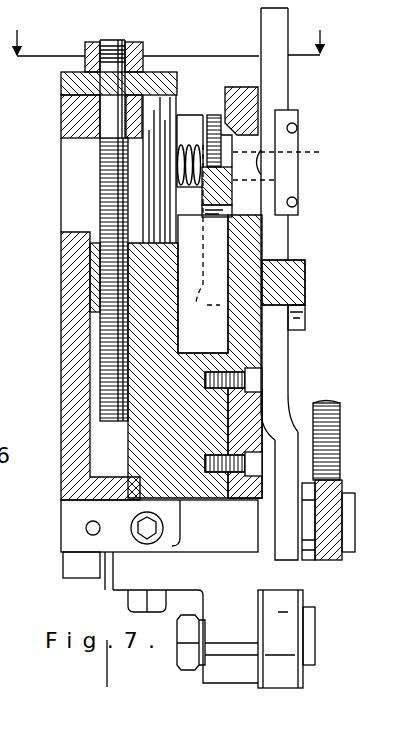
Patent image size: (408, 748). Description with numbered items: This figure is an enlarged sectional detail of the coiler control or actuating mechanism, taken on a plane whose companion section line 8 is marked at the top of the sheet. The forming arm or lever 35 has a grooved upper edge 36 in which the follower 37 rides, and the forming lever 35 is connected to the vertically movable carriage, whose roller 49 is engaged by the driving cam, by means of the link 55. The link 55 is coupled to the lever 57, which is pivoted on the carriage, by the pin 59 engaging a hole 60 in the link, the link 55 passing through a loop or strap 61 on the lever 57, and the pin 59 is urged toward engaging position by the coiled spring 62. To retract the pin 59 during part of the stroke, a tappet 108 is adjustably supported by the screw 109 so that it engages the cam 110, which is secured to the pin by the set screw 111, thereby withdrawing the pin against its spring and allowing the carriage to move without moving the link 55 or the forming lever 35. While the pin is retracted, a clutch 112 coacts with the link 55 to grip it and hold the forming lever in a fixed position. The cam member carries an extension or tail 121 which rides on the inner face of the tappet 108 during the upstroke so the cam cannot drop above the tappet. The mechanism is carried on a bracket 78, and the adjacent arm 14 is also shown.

The section line 8- 8 is at (168, 30).
The arm 14 is at (291, 227).
The forming arm or lever 35 is at (333, 560).
The grooved upper edge 36 is at (341, 478).
The follower 37 is at (338, 412).
The roller 49 is at (280, 667).
The link 55 is at (282, 393).
The lever 57 is at (197, 118).
The pin 59 is at (270, 163).
The hole 60 is at (277, 152).
The loop or strap 61 is at (293, 118).
The coiled spring 62 is at (185, 152).
The bracket 78 is at (72, 262).
The tappet 108 is at (259, 92).
The screw 109 is at (107, 140).
The cam 110 is at (235, 168).
The set screw 111 is at (215, 106).
The clutch 112 is at (287, 280).
The extension or tail 121 is at (203, 249).